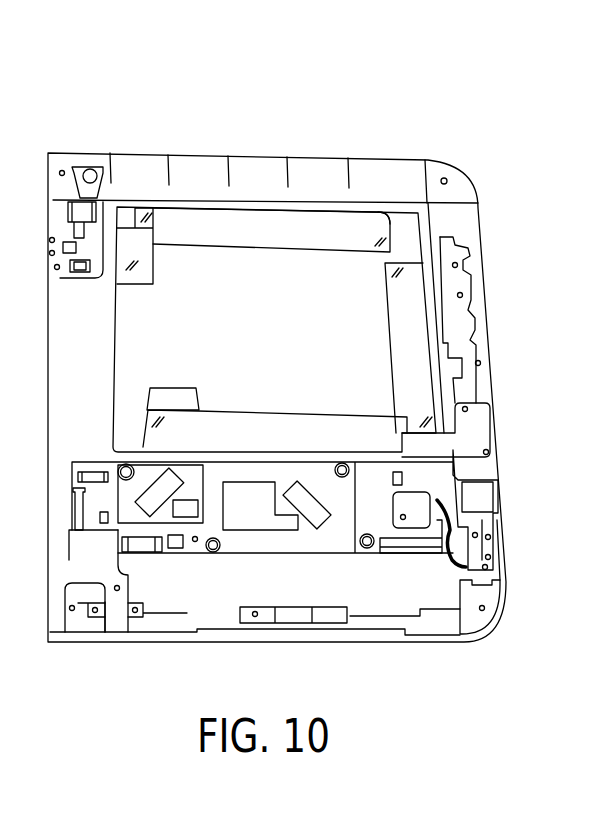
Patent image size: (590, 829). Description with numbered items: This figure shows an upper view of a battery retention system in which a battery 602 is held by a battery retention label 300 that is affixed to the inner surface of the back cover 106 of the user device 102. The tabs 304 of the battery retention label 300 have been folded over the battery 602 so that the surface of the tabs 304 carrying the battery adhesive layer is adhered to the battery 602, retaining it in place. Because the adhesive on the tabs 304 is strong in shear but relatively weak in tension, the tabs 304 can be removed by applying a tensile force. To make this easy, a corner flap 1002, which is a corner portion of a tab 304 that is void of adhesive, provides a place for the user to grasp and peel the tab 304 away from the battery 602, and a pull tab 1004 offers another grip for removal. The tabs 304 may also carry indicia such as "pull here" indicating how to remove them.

The electronic device 102 is at (458, 78).
The back cover 106 is at (462, 167).
The battery retention label 300 is at (265, 118).
The tabs 304 is at (262, 250).
The battery 602 is at (274, 336).
The corner flap 1002 is at (368, 268).
The pull tab 1004 is at (178, 389).